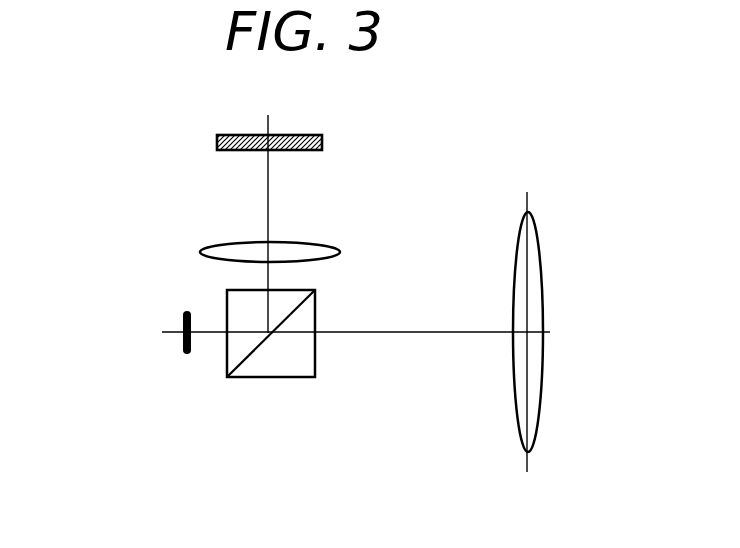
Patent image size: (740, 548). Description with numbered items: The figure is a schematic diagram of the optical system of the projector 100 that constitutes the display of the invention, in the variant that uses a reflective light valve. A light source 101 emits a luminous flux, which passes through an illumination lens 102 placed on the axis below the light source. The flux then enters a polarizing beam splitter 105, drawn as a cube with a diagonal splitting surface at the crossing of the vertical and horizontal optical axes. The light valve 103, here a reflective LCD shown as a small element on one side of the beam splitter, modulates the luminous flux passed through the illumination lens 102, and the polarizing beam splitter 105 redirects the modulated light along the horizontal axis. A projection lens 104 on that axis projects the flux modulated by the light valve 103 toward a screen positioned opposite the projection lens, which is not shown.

The projector 100 is at (401, 168).
The light source 101 is at (227, 133).
The illumination lens 102 is at (227, 243).
The light valve 103 is at (185, 312).
The projection lens 104 is at (532, 240).
The polarizing beam splitter 105 is at (302, 362).